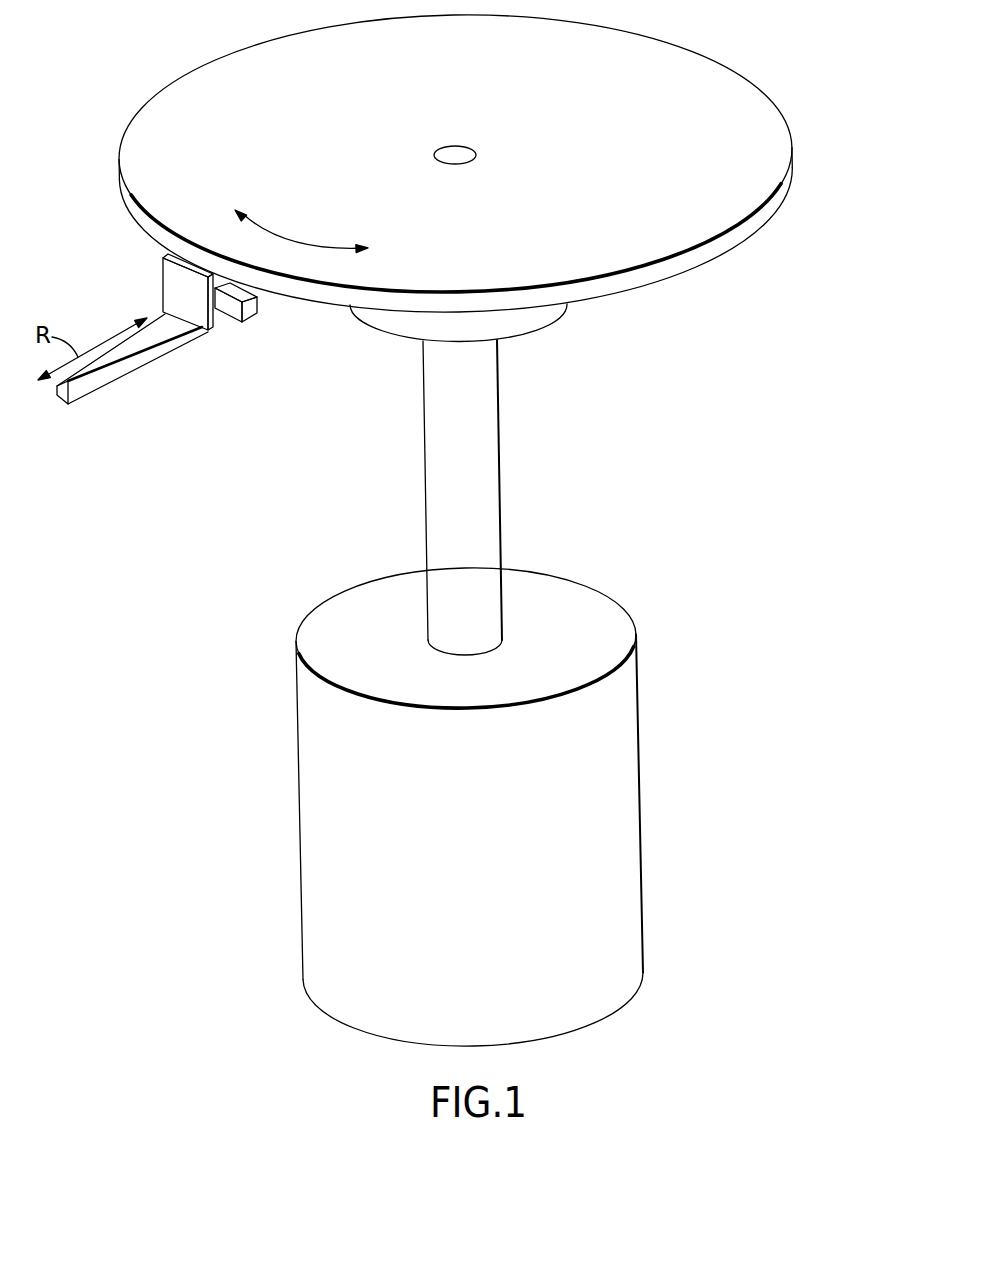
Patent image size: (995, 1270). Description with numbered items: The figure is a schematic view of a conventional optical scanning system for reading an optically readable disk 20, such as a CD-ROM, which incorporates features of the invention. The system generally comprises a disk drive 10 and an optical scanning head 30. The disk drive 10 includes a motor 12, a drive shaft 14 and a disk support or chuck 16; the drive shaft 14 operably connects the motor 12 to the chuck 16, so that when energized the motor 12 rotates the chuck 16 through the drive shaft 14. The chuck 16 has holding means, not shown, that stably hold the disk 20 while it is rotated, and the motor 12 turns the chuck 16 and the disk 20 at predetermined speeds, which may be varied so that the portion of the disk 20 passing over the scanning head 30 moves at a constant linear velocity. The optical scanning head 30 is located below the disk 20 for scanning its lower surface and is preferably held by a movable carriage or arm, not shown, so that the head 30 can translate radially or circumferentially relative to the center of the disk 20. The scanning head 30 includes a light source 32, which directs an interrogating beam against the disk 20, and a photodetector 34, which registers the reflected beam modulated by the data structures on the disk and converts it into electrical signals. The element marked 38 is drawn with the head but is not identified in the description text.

The disk drive 10 is at (705, 462).
The motor 12 is at (620, 795).
The drive shaft 14 is at (475, 495).
The disk support or chuck 16 is at (537, 328).
The optically readable disk 20 is at (702, 90).
The optical scanning head 30 is at (175, 280).
The light source 32 is at (175, 292).
The photodetector 34 is at (250, 310).
The rod 38 is at (95, 382).